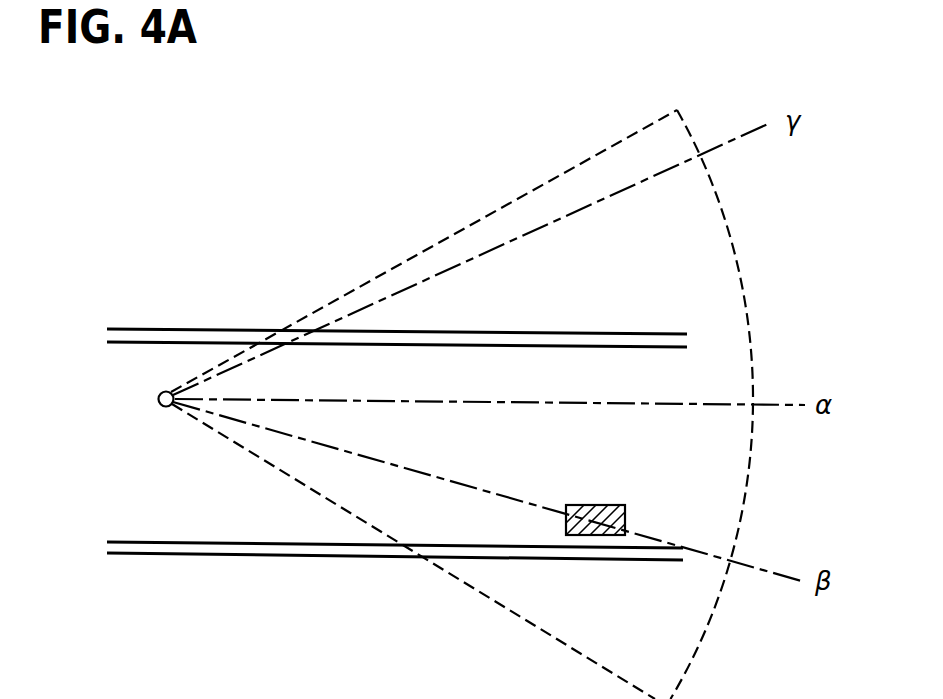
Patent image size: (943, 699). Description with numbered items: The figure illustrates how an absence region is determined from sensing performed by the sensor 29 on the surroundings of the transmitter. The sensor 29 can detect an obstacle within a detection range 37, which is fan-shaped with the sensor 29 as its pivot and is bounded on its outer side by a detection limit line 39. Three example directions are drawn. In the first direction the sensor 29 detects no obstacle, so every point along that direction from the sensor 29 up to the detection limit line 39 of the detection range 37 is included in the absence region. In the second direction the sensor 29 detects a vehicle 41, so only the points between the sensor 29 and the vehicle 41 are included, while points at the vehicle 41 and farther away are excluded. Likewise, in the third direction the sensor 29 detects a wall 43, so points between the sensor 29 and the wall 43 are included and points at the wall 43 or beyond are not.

The sensor 29 is at (158, 397).
The detection range 37 is at (572, 168).
The detection limit line 39 is at (749, 472).
The vehicle 41 is at (595, 505).
The wall 43 is at (549, 335).